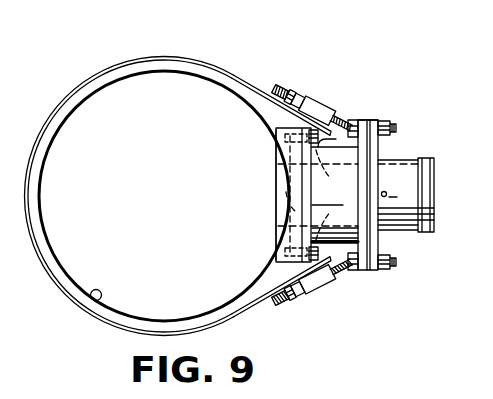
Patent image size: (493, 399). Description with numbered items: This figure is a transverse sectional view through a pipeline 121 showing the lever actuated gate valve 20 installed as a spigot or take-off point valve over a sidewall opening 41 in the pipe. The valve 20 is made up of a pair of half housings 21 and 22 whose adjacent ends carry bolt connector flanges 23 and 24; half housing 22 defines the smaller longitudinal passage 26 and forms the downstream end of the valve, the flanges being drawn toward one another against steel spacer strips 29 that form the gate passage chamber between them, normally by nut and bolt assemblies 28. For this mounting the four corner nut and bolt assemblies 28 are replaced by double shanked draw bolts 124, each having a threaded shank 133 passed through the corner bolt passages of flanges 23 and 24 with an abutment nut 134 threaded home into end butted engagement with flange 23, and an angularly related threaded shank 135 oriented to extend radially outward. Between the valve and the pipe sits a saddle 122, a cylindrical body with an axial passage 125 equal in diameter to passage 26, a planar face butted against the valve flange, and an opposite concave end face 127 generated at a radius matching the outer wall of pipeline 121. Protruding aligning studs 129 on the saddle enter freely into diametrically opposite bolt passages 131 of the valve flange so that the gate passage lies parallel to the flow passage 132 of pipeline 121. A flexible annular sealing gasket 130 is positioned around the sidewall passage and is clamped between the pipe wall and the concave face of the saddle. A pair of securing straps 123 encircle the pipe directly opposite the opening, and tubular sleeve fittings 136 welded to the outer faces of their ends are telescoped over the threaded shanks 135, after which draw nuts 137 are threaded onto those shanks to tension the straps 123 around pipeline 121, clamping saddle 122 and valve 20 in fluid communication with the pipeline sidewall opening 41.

The gate valve 20 is at (377, 117).
The half housing 21 is at (317, 177).
The half housing 22 is at (412, 227).
The bolt connector flange 23 is at (368, 118).
The bolt connector flange 24 is at (375, 176).
The longitudinal passage 26 is at (435, 170).
The nut and bolt assembly 28 is at (320, 145).
The steel spacer strip 29 is at (375, 150).
The sidewall opening 41 is at (283, 177).
The pipeline 121 is at (63, 290).
The saddle 122 is at (277, 98).
The securing strap 123 is at (211, 58).
The double shanked draw bolt 124 is at (294, 80).
The axial passage 125 is at (280, 223).
The concave end face 127 is at (276, 145).
The aligning stud 129 is at (250, 258).
The flexible annular sealing gasket 130 is at (283, 128).
The bolt passage 131 is at (327, 170).
The flow passage 132 is at (92, 300).
The threaded shank 133 is at (397, 128).
The abutment nut 134 is at (352, 120).
The threaded shank 135 is at (290, 87).
The tubular sleeve fitting 136 is at (318, 97).
The draw nut 137 is at (298, 92).